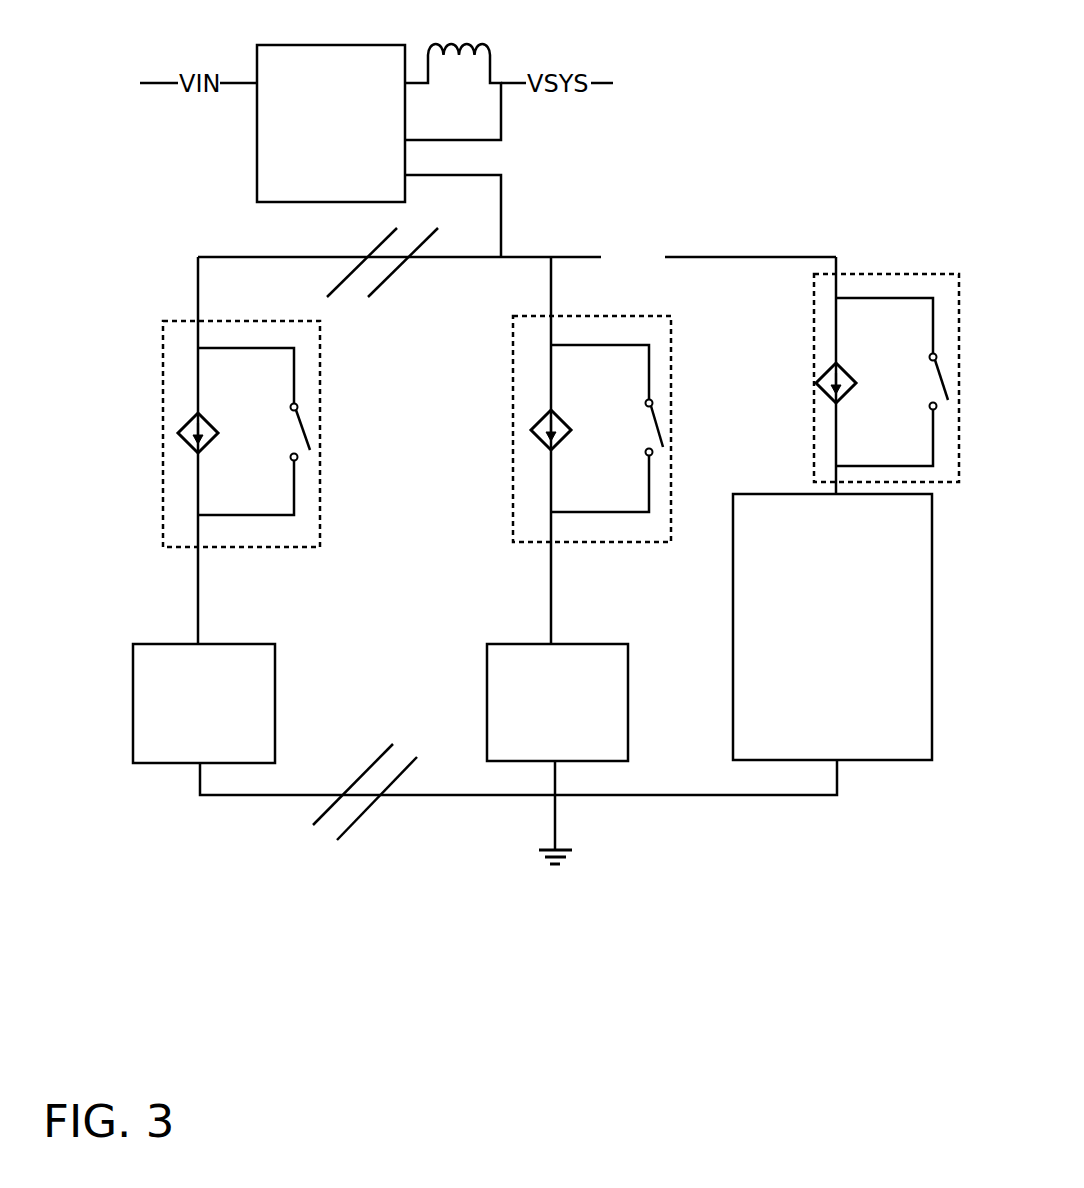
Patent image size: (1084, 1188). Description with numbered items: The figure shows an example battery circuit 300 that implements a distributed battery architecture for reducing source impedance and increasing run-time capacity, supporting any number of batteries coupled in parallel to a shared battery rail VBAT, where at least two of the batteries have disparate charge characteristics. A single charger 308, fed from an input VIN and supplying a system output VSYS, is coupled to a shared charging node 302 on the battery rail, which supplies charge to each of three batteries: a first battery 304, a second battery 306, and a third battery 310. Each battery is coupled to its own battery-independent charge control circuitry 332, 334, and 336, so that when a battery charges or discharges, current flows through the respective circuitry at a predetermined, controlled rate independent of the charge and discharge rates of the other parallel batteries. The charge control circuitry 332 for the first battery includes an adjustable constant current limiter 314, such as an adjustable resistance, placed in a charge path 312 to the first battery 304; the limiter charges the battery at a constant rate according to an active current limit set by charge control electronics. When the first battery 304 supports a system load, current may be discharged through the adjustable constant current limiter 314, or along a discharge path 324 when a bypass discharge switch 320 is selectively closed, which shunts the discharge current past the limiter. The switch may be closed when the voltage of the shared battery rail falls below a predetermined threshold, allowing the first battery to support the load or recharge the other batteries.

The battery circuit 300 is at (731, 66).
The shared charging node 302 is at (502, 257).
The first battery 304 is at (184, 716).
The second battery 306 is at (537, 716).
The charger 308 is at (311, 136).
The third battery 310 is at (812, 641).
The charge path 312 is at (198, 385).
The adjustable constant current limiter 314 is at (190, 419).
The bypass discharge switch 320 is at (305, 430).
The discharge path 324 is at (294, 493).
The battery-independent charge control circuitry 332 is at (320, 383).
The battery-independent charge control circuitry 334 is at (671, 378).
The battery-independent charge control circuitry 336 is at (815, 332).